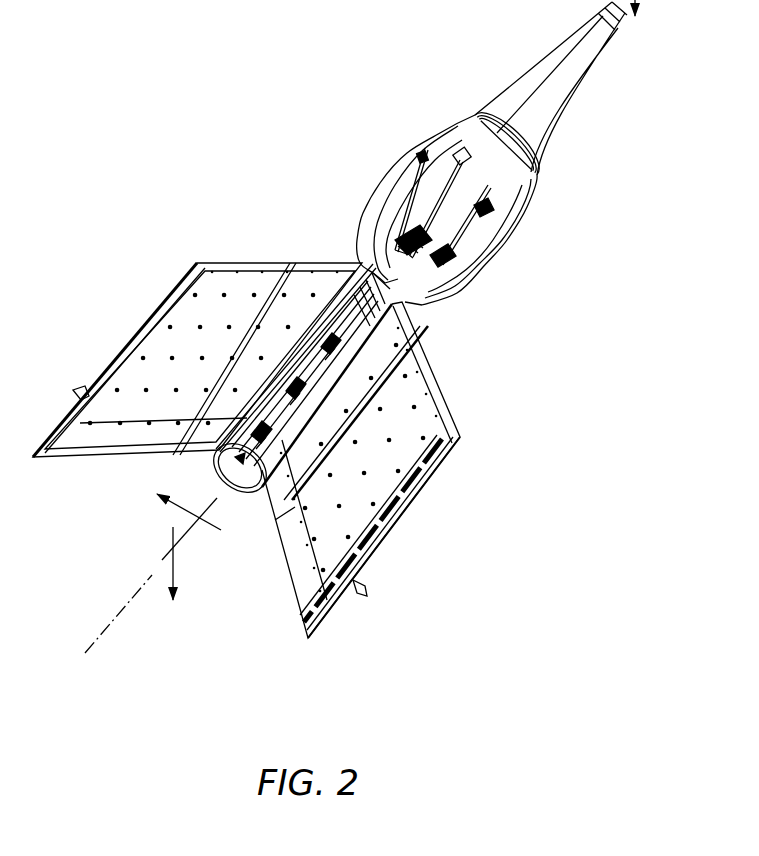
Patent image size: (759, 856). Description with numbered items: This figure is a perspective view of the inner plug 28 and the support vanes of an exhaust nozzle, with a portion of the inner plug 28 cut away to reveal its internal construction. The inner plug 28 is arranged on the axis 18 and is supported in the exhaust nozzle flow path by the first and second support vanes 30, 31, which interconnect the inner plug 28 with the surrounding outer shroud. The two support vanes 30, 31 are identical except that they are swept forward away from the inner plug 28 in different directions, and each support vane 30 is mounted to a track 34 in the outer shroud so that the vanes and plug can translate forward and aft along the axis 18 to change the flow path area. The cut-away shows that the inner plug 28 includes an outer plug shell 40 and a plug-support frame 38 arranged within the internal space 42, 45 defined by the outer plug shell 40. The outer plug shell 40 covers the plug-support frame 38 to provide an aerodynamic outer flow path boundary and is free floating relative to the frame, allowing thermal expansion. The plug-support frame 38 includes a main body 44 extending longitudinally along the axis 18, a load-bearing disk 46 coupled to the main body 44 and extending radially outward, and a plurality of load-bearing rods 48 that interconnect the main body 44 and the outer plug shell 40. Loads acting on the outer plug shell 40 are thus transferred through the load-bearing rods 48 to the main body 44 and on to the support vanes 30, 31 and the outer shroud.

The axis 18 is at (131, 600).
The inner plug 28 is at (480, 165).
The support vane 30 is at (238, 255).
The second support vane 31 is at (468, 375).
The track 34 is at (121, 330).
The plug-support frame 38 is at (403, 188).
The outer plug shell 40 is at (517, 184).
The internal space 42 is at (440, 138).
The main body 44 is at (332, 305).
The internal space 45 is at (433, 186).
The load-bearing disk 46 is at (410, 290).
The load-bearing rods 48 is at (478, 235).